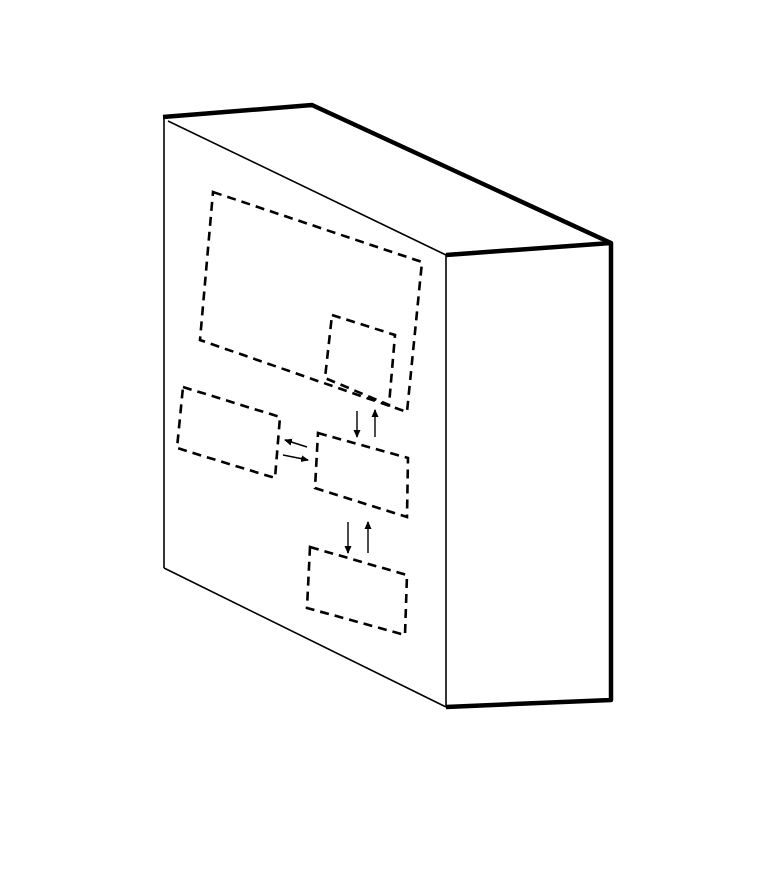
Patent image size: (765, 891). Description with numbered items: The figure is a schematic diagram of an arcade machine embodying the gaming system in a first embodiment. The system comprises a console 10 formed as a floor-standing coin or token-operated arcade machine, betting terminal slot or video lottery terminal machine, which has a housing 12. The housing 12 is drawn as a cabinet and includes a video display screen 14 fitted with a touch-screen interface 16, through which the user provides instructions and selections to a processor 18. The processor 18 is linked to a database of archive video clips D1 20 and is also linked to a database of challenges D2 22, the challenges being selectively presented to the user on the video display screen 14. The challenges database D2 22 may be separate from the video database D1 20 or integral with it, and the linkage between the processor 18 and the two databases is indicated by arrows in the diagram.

The console 10 is at (132, 82).
The housing 12 is at (162, 192).
The video display screen 14 is at (344, 238).
The touch-screen interface 16 is at (375, 326).
The processor 18 is at (410, 458).
The database of archive video clips D1 20 is at (178, 408).
The database of challenges D2 22 is at (408, 623).